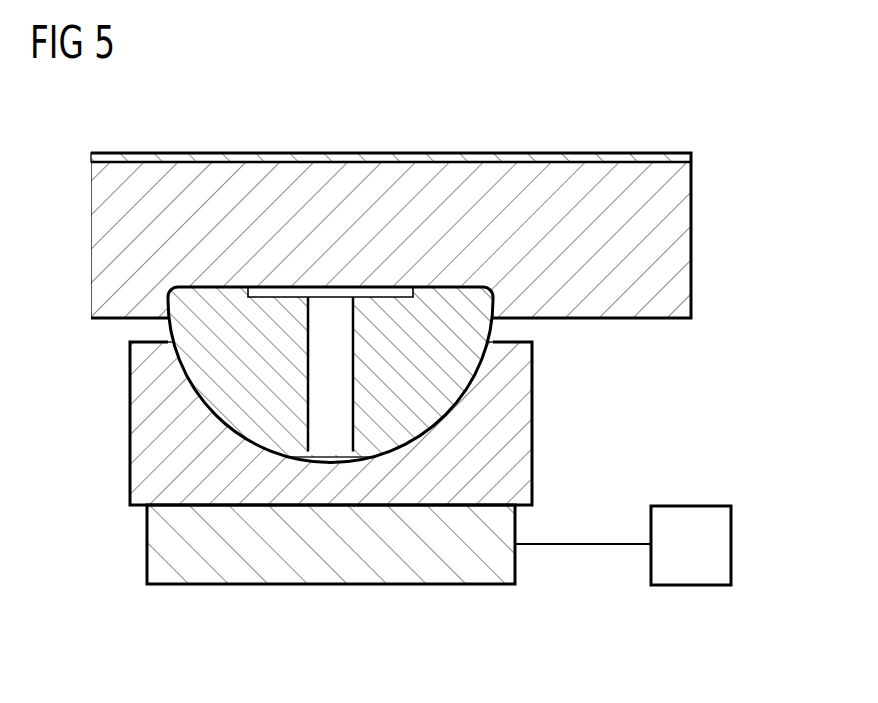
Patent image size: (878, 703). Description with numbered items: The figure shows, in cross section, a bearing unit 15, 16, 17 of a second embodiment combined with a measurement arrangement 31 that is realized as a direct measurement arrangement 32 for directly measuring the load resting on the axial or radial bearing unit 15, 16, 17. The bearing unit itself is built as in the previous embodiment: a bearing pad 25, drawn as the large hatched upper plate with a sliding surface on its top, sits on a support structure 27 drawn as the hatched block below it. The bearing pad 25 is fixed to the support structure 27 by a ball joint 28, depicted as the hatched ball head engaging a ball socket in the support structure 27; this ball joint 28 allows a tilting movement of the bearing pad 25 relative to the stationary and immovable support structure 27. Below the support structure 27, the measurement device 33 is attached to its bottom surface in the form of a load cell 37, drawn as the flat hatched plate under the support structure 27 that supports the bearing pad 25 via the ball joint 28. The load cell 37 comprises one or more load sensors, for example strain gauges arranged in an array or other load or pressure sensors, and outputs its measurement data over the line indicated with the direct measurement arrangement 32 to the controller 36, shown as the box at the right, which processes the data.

The axial bearing unit 15 is at (456, 380).
The axial bearing unit 16 is at (456, 380).
The radial bearing unit 17 is at (456, 380).
The bearing pad 25 is at (683, 226).
The support structure 27 is at (524, 372).
The ball joint 28 is at (205, 414).
The measurement arrangement 31 is at (665, 498).
The direct measurement arrangement 32 is at (585, 516).
The measurement device 33 is at (330, 597).
The controller 36 is at (733, 540).
The load cell 37 is at (316, 577).